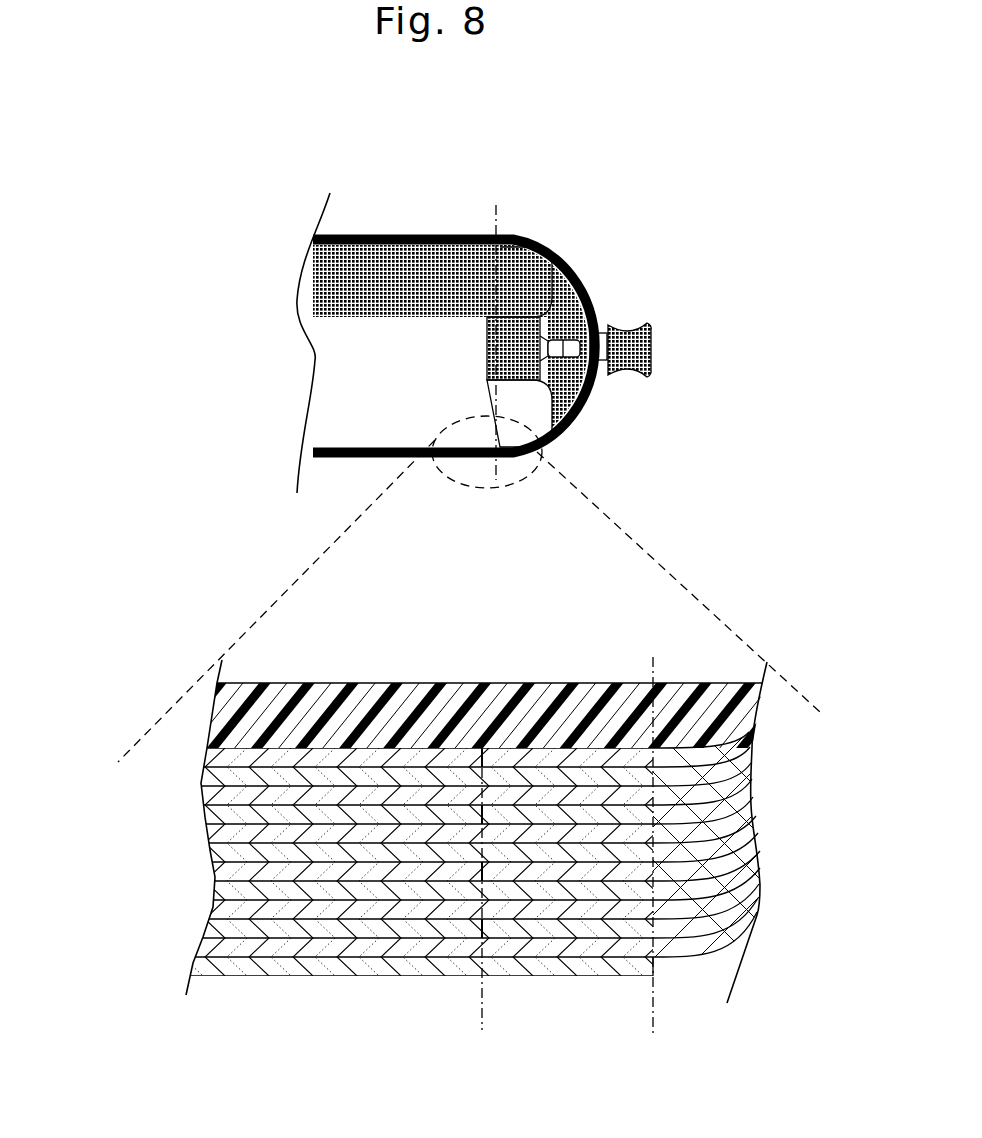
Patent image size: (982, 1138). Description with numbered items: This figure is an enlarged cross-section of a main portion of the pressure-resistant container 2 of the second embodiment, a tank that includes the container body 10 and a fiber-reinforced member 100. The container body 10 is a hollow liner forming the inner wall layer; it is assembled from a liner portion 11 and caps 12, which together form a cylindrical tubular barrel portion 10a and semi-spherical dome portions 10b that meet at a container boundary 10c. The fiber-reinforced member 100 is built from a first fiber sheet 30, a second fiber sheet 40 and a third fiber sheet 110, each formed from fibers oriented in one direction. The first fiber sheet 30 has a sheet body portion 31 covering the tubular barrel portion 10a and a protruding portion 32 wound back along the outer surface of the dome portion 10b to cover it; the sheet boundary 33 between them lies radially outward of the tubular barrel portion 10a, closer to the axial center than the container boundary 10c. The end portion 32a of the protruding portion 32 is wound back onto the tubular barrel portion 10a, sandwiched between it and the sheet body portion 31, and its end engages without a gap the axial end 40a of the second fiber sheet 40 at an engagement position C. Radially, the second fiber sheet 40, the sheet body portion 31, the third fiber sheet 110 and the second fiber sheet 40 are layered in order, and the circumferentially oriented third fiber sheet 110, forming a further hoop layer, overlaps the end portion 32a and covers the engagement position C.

The pressure-resistant container 2 is at (590, 217).
The container body 10 is at (238, 712).
The tubular barrel portion 10a is at (398, 230).
The dome portion 10b is at (603, 292).
The container boundary 10c is at (496, 200).
The liner portion 11 is at (335, 383).
The cap 12 is at (573, 380).
The fiber-reinforced member 100 is at (360, 458).
The first fiber sheet 30 is at (764, 730).
The sheet body portion 31 is at (377, 957).
The protruding portion 32 is at (712, 937).
The end portion 32a is at (535, 925).
The sheet boundary 33 is at (593, 977).
The second fiber sheet 40 is at (205, 758).
The end of the second fiber sheet 40a is at (497, 920).
The third fiber sheet 110 is at (213, 795).
The engagement position C is at (480, 906).